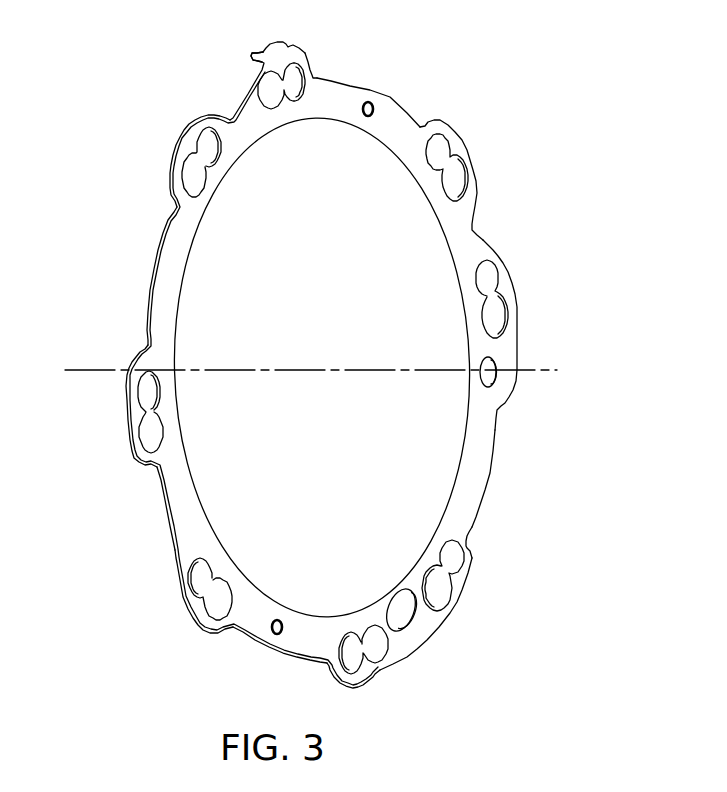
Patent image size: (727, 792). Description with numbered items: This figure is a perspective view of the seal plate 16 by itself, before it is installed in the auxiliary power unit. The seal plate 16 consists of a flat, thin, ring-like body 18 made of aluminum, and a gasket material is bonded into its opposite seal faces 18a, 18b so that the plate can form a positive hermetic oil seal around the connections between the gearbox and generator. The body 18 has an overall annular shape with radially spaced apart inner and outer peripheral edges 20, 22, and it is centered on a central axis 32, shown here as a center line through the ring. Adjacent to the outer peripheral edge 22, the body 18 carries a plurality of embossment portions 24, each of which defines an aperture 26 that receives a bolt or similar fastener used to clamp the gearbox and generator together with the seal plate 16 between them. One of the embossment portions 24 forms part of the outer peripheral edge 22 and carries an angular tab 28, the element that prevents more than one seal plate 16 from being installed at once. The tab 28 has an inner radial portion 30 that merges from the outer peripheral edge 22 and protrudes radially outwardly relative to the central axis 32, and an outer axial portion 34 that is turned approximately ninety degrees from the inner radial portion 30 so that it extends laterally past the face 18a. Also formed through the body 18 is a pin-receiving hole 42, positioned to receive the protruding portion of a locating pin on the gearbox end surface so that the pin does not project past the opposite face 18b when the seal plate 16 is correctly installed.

The seal plate 16 is at (293, 377).
The ring-like body 18 is at (322, 367).
The seal face 18a is at (293, 378).
The seal face 18b is at (322, 367).
The inner peripheral edge 20 is at (293, 378).
The outer peripheral edge 22 is at (301, 378).
The embossment portions 24 is at (317, 367).
The apertures 26 is at (278, 102).
The angular tab 28 is at (233, 72).
The inner radial portion 30 is at (294, 38).
The central axis 32 is at (311, 345).
The outer axial portion 34 is at (227, 65).
The pin-receiving hole 42 is at (348, 357).